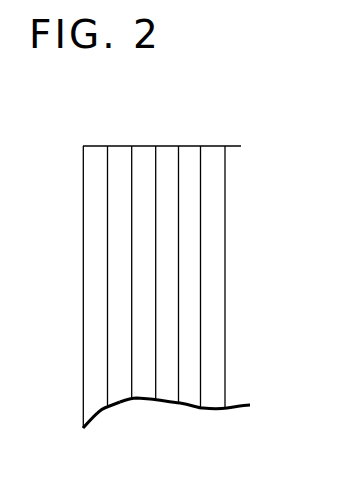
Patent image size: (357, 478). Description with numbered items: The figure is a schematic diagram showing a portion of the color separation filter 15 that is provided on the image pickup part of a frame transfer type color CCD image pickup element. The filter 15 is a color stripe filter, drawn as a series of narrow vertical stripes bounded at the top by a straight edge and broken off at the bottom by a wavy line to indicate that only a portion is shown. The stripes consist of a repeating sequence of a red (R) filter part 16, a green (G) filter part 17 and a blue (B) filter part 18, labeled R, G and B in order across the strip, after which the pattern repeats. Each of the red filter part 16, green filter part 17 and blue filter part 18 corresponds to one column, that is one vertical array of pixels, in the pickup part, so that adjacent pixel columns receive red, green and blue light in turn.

The color separation filter 15 is at (125, 147).
The red (R) filter part 16 is at (93, 398).
The green (G) filter part 17 is at (120, 390).
The blue (B) filter part 18 is at (145, 388).